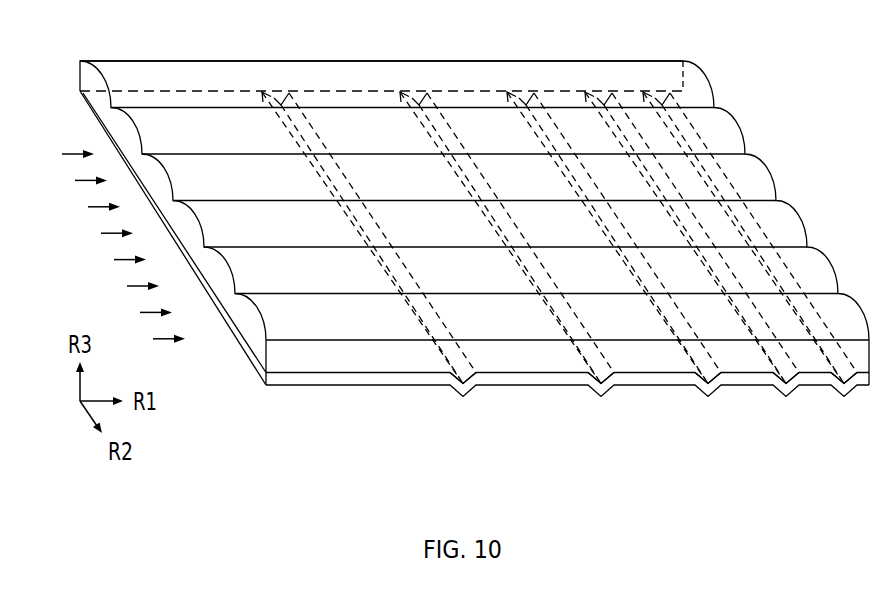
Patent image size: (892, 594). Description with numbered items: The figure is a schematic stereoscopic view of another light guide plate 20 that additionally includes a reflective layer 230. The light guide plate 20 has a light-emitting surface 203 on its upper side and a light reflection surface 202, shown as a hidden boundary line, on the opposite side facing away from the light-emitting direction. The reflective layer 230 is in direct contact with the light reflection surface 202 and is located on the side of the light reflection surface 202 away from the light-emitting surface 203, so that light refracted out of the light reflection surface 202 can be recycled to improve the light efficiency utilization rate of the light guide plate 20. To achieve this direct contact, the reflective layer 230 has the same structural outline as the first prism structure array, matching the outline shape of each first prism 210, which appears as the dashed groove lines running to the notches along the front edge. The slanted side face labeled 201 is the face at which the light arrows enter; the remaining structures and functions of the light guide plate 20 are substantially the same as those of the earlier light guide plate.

The light guide plate 20 is at (815, 43).
The light incident side surface 201 is at (248, 327).
The light reflection surface 202 is at (322, 91).
The light-emitting surface 203 is at (373, 60).
The first prism 210 is at (610, 383).
The reflective layer 230 is at (503, 387).